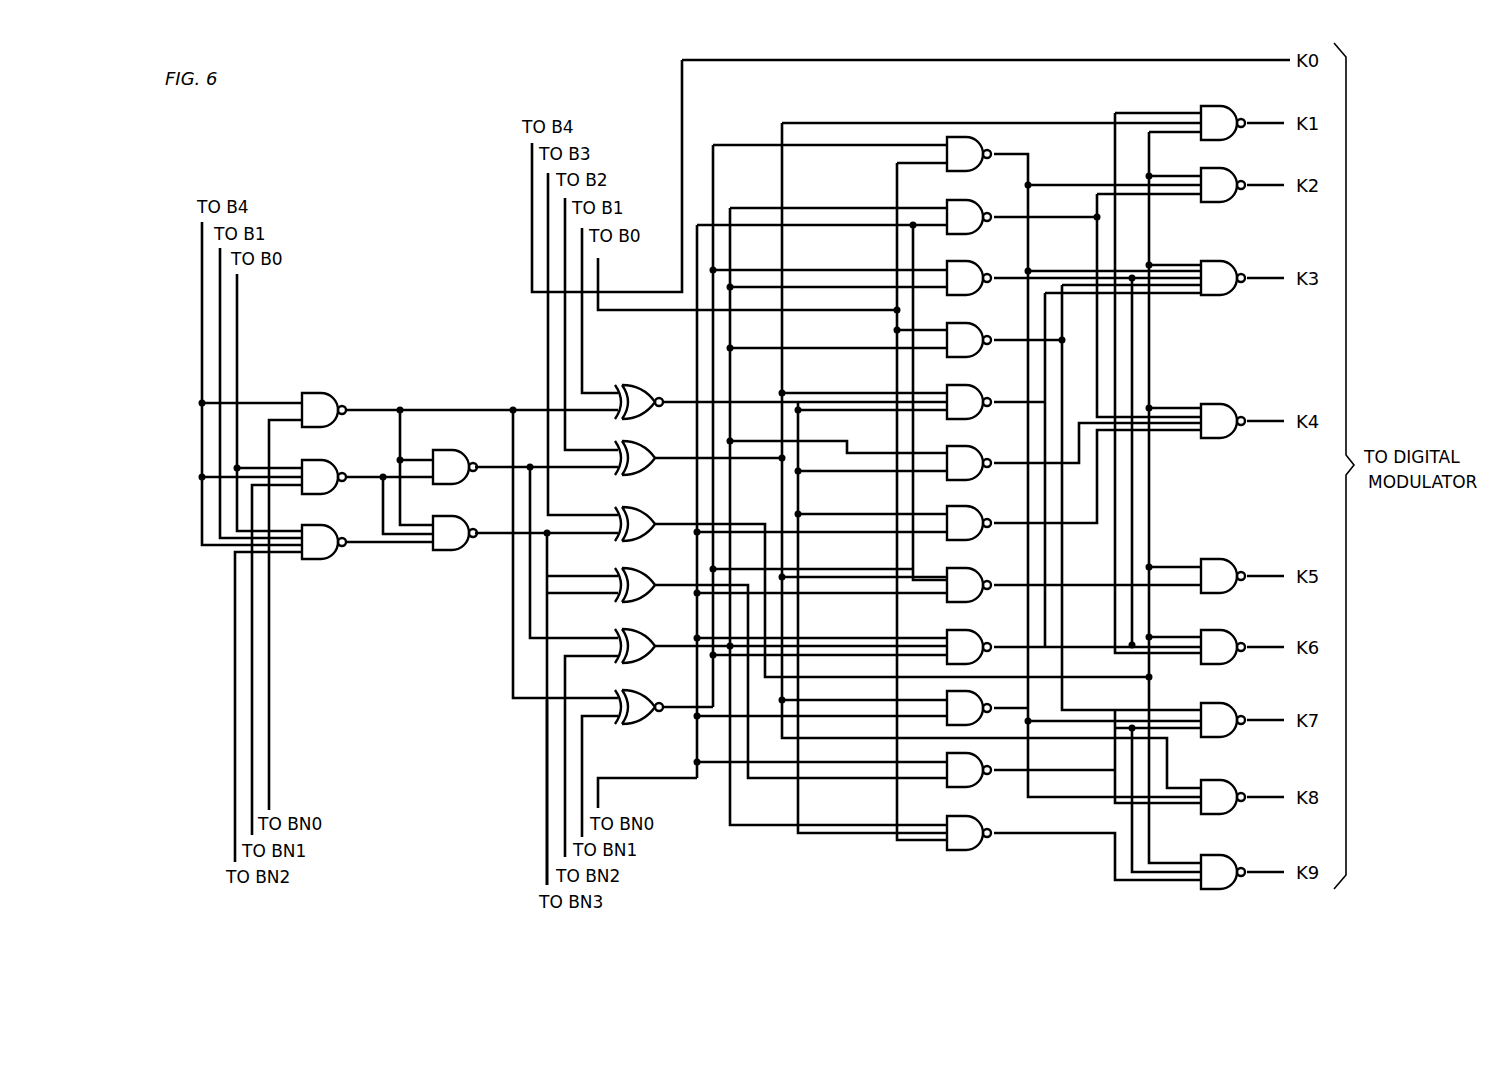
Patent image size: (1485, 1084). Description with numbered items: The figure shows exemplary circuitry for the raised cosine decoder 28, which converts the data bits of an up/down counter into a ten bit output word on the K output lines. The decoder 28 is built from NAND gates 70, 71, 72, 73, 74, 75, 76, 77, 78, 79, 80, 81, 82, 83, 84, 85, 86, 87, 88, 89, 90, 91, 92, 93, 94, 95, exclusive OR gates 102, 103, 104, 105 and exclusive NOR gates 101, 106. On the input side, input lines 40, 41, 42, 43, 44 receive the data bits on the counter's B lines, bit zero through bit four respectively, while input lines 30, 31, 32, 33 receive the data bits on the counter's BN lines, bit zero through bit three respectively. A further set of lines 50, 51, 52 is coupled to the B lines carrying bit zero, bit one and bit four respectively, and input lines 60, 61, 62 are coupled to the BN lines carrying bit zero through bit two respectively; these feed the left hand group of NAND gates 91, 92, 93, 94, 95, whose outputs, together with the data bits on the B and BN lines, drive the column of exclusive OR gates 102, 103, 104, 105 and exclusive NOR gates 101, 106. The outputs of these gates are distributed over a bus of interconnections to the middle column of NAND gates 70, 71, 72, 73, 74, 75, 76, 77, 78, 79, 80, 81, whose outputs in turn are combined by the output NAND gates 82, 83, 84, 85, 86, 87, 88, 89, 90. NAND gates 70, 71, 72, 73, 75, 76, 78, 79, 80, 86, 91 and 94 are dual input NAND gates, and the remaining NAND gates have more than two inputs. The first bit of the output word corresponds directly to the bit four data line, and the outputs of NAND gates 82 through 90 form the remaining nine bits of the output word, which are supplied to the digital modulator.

The raised cosine decoder 28 is at (390, 204).
The input line 30 is at (598, 800).
The input line 31 is at (582, 765).
The input line 32 is at (565, 820).
The input line 33 is at (547, 855).
The input line 40 is at (598, 293).
The input line 41 is at (582, 355).
The input line 42 is at (565, 325).
The input line 43 is at (548, 208).
The input line 44 is at (532, 243).
The line 50 is at (237, 362).
The line 51 is at (220, 320).
The line 52 is at (202, 365).
The input line 60 is at (269, 765).
The input line 61 is at (252, 720).
The input line 62 is at (235, 765).
The NAND gate 70 is at (978, 167).
The NAND gate 71 is at (978, 230).
The NAND gate 72 is at (978, 291).
The NAND gate 73 is at (978, 353).
The NAND gate 74 is at (978, 415).
The NAND gate 75 is at (978, 476).
The NAND gate 76 is at (978, 536).
The NAND gate 77 is at (978, 598).
The NAND gate 78 is at (978, 660).
The NAND gate 79 is at (978, 721).
The NAND gate 80 is at (978, 783).
The NAND gate 81 is at (978, 846).
The NAND gate 82 is at (1232, 136).
The NAND gate 83 is at (1232, 198).
The NAND gate 84 is at (1232, 291).
The NAND gate 85 is at (1232, 434).
The NAND gate 86 is at (1232, 589).
The NAND gate 87 is at (1232, 660).
The NAND gate 88 is at (1232, 733).
The NAND gate 89 is at (1232, 810).
The NAND gate 90 is at (1232, 885).
The NAND gate 91 is at (330, 393).
The NAND gate 92 is at (330, 460).
The NAND gate 93 is at (330, 525).
The NAND gate 94 is at (461, 450).
The NAND gate 95 is at (461, 516).
The exclusive NOR gate 101 is at (640, 385).
The exclusive OR gate 102 is at (640, 441).
The exclusive OR gate 103 is at (640, 507).
The exclusive OR gate 104 is at (640, 568).
The exclusive OR gate 105 is at (640, 629).
The exclusive NOR gate 106 is at (640, 690).